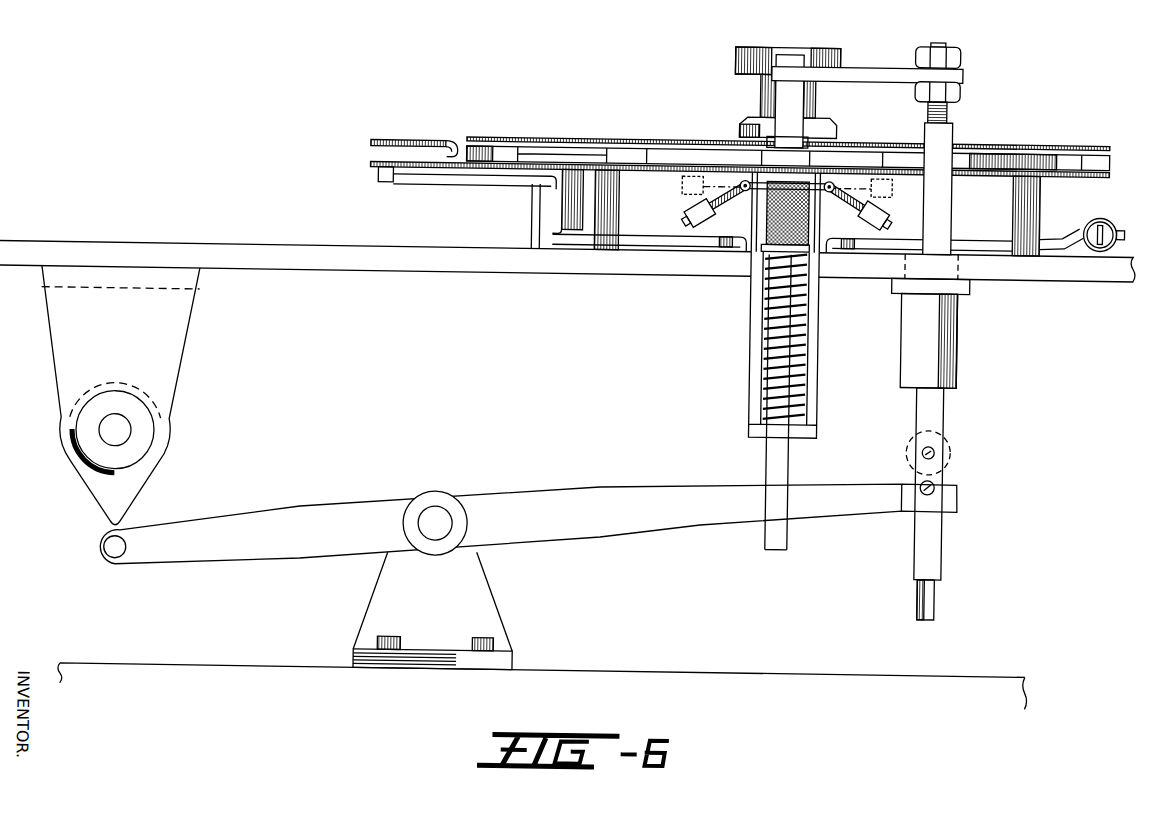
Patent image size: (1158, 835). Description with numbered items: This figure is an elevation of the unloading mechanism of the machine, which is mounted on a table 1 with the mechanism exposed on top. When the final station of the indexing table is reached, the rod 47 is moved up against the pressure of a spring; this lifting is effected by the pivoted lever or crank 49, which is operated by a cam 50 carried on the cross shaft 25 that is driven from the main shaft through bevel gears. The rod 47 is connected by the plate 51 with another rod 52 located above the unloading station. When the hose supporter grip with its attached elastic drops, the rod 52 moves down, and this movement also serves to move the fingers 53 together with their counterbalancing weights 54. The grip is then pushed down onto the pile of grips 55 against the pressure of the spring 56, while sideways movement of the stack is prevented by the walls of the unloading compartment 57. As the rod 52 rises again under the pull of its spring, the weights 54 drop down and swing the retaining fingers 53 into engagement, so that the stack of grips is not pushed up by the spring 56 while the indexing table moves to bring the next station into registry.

The table 1 is at (484, 249).
The cross shaft 25 is at (126, 435).
The rod 47 is at (943, 408).
The pivoted lever or crank 49 is at (576, 487).
The cam 50 is at (153, 498).
The plate 51 is at (862, 64).
The rod 52 is at (780, 95).
The fingers 53 is at (745, 188).
The counterbalancing weights 54 is at (685, 209).
The pile of grips 55 is at (797, 228).
The spring 56 is at (793, 354).
The unloading compartment 57 is at (818, 308).